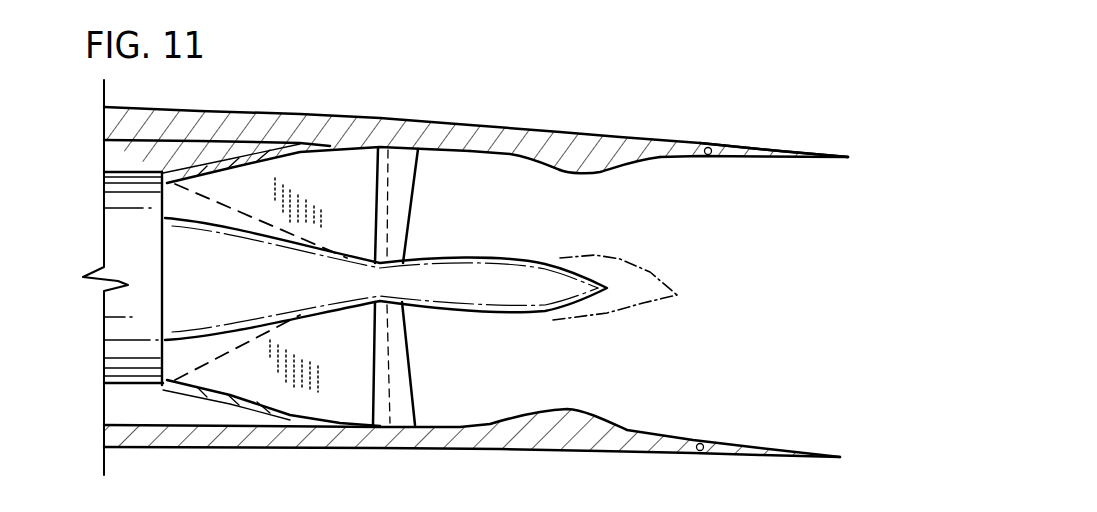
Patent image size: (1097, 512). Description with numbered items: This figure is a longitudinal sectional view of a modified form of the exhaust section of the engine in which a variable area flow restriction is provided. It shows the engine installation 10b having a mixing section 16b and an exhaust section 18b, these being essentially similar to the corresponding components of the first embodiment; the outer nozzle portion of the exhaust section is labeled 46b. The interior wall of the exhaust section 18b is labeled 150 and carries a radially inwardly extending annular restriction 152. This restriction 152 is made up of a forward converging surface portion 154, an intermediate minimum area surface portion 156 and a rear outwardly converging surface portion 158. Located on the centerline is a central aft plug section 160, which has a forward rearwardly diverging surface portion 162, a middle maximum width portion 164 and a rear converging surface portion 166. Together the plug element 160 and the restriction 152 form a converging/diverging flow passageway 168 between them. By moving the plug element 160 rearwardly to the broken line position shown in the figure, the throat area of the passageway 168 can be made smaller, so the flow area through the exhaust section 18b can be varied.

The engine installation 10b is at (580, 100).
The mixing section 16b is at (262, 97).
The exhaust section 18b is at (609, 108).
The fan nozzle trailing portion 46b is at (758, 153).
The duct outer wall liner 150 is at (448, 157).
The annular restriction 152 is at (597, 165).
The forward converging surface portion 154 is at (540, 162).
The intermediate minimum area surface portion 156 is at (578, 177).
The rear outwardly converging surface portion 158 is at (622, 169).
The central aft plug section 160 is at (535, 270).
The forward rearwardly diverging surface portion 162 is at (419, 306).
The middle maximum width portion 164 is at (528, 305).
The rear converging surface portion 166 is at (528, 316).
The converging/diverging flow passageway 168 is at (537, 356).